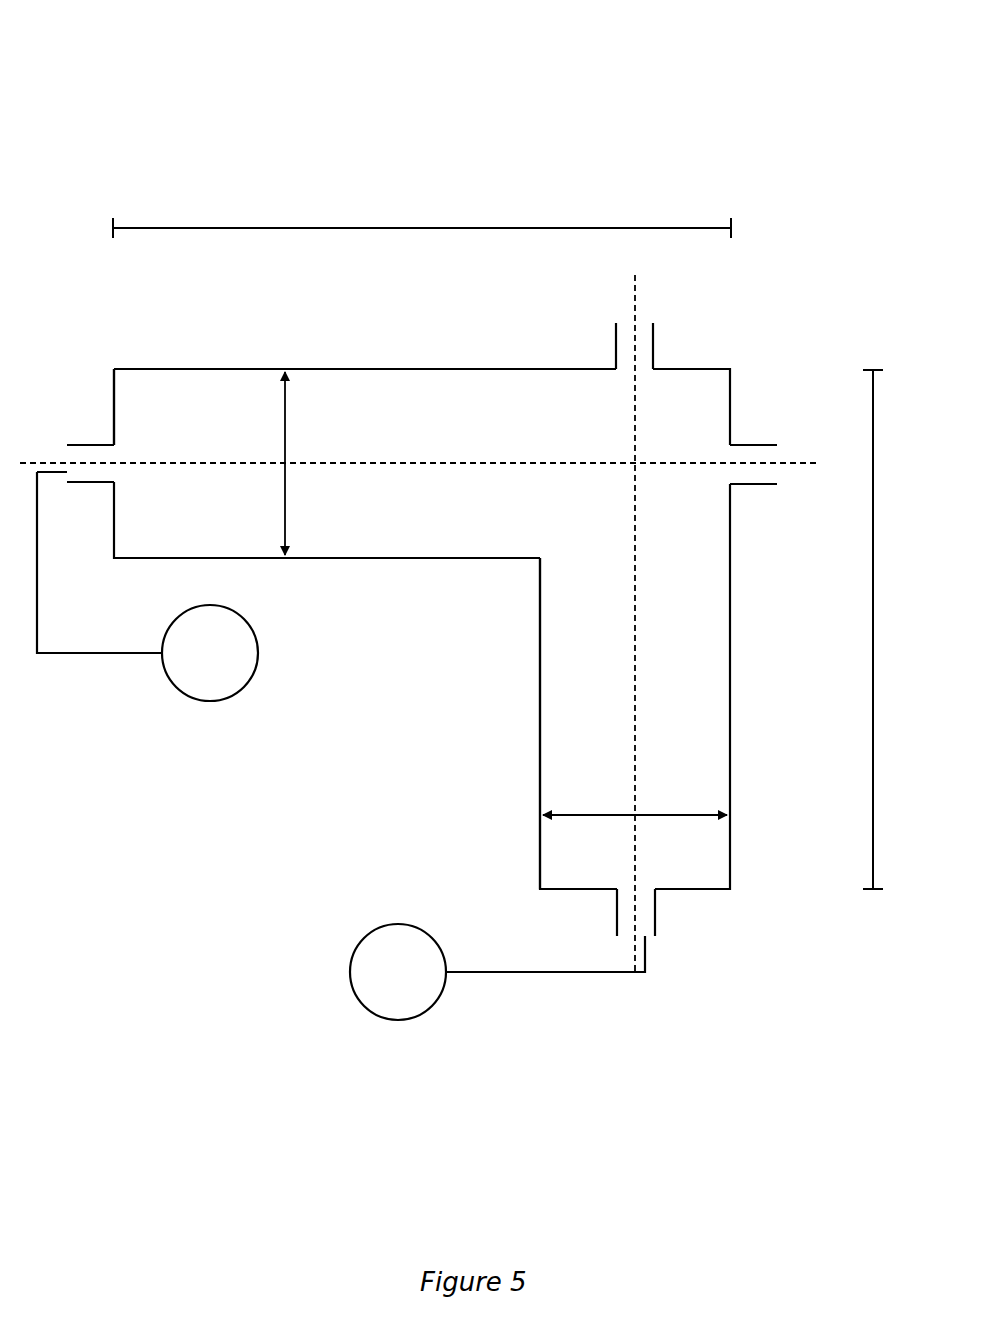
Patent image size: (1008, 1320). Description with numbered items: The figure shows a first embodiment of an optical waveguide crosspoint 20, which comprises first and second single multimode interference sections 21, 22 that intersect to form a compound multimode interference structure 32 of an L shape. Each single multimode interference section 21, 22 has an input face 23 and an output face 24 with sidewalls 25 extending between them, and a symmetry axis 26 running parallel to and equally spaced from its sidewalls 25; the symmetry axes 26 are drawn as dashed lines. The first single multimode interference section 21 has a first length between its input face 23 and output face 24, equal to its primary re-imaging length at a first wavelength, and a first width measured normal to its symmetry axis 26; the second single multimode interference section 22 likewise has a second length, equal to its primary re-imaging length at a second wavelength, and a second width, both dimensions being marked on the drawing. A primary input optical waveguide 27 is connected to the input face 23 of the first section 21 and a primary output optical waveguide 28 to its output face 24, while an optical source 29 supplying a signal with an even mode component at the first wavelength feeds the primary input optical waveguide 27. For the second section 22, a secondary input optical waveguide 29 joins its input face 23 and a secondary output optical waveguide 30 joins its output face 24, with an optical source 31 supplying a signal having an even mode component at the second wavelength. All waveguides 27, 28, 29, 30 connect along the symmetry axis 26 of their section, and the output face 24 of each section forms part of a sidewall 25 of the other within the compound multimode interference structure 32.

The optical waveguide crosspoint 20 is at (208, 184).
The first single multimode interference section 21 is at (405, 403).
The second single multimode interference section 22 is at (677, 668).
The input face 23 is at (107, 398).
The output face 24 is at (693, 365).
The sidewall 25 is at (425, 363).
The symmetry axis 26 is at (640, 290).
The primary input optical waveguide 27 is at (75, 442).
The primary output optical waveguide 28 is at (762, 440).
The optical source / secondary input optical waveguide 29 is at (603, 912).
The secondary output optical waveguide 30 is at (613, 343).
The optical source 31 is at (497, 972).
The compound multimode interference structure 32 is at (408, 708).